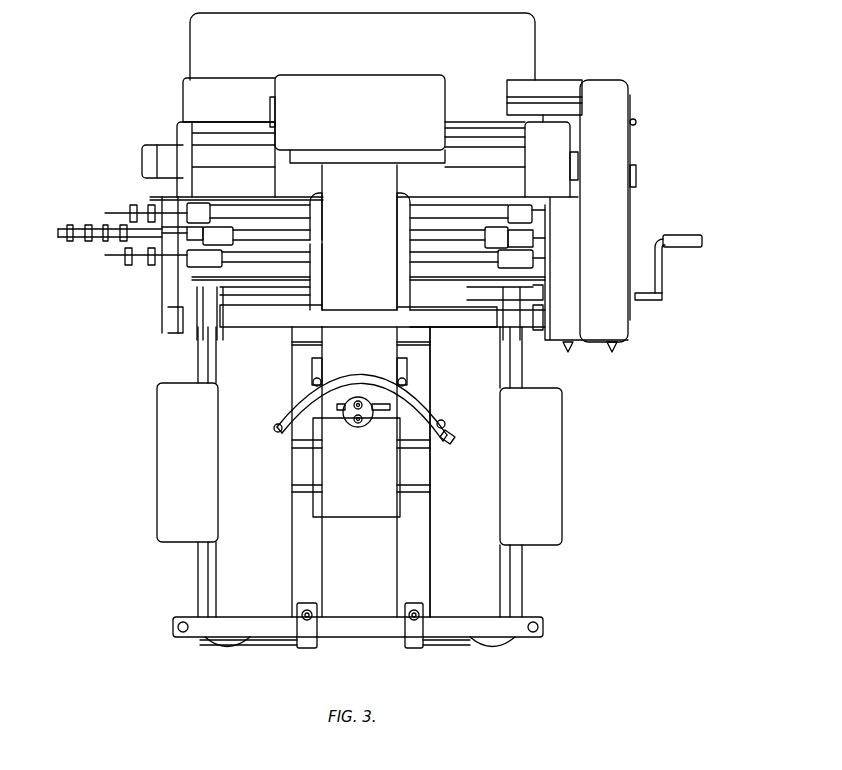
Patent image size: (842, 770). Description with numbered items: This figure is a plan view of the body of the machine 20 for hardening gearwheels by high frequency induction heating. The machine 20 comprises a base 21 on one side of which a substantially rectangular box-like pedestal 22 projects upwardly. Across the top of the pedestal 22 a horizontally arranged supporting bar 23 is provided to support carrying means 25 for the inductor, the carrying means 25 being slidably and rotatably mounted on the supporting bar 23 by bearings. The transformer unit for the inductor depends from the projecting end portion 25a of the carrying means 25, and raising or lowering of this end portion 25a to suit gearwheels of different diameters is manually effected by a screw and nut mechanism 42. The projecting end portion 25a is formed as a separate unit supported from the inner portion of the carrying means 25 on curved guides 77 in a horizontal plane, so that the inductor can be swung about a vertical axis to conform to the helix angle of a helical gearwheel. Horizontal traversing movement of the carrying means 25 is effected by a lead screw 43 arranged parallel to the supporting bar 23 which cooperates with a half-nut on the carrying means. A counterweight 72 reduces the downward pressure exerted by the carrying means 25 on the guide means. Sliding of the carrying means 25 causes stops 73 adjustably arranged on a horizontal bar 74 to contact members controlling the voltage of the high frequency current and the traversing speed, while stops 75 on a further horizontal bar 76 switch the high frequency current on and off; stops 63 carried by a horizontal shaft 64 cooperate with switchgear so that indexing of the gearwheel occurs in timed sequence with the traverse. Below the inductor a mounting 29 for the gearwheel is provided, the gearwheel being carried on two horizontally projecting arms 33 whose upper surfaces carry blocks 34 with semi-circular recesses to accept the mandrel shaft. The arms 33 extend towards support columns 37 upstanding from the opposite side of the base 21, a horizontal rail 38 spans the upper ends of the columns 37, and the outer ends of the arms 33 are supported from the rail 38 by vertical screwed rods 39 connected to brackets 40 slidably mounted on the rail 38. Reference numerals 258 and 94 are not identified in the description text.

The machine 20 is at (541, 80).
The base 21 is at (200, 573).
The pedestal 22 is at (185, 103).
The supporting bar 23 is at (141, 196).
The carrying means 25 is at (332, 345).
The column portion 258 is at (393, 353).
The projecting end portion 25a is at (316, 505).
The mounting 29 is at (438, 559).
The arms 33 is at (296, 560).
The blocks 34 is at (298, 487).
The support columns 37 is at (183, 633).
The horizontal rail 38 is at (239, 638).
The screwed rods 39 is at (302, 613).
The brackets 40 is at (303, 641).
The screw and nut mechanism 42 is at (366, 425).
The lead screw 43 is at (238, 160).
The stops 63 is at (190, 258).
The horizontal shaft 64 is at (131, 266).
The counterweight 72 is at (427, 78).
The stops 73 is at (195, 212).
The horizontal bar 74 is at (130, 213).
The stops 75 is at (190, 233).
The horizontal bar 76 is at (79, 241).
The curved guides 77 is at (354, 386).
The crank handle 94 is at (659, 301).